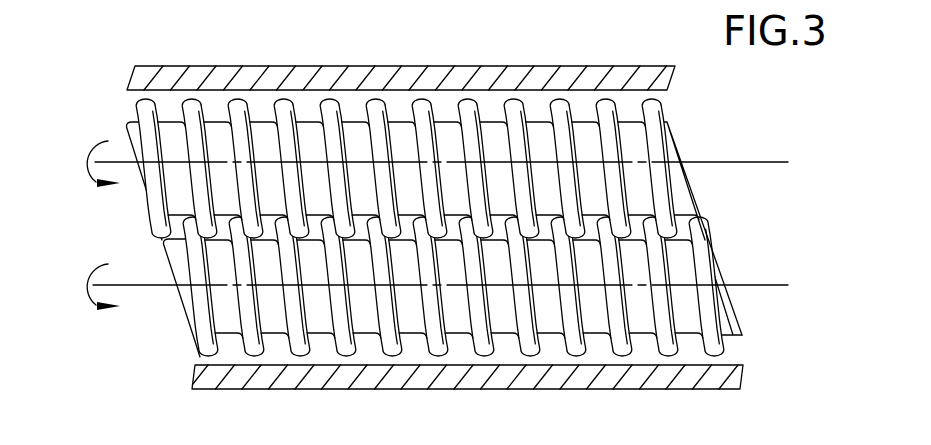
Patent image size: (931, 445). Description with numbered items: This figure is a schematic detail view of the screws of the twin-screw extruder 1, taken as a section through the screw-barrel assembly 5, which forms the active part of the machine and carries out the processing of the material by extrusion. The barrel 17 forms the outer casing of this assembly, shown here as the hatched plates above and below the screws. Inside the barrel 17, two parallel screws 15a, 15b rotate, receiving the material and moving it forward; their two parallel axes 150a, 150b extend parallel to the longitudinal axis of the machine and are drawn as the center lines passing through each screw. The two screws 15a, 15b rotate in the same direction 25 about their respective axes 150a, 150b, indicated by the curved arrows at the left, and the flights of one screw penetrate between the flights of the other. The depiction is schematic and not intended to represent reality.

The twin-screw extruder 1 is at (603, 40).
The screw-barrel assembly 5 is at (166, 55).
The barrel 17 is at (303, 77).
The screw 15a is at (637, 143).
The screw 15b is at (687, 315).
The axis 150a is at (758, 162).
The axis 150b is at (745, 285).
The direction of rotation 25 is at (87, 157).